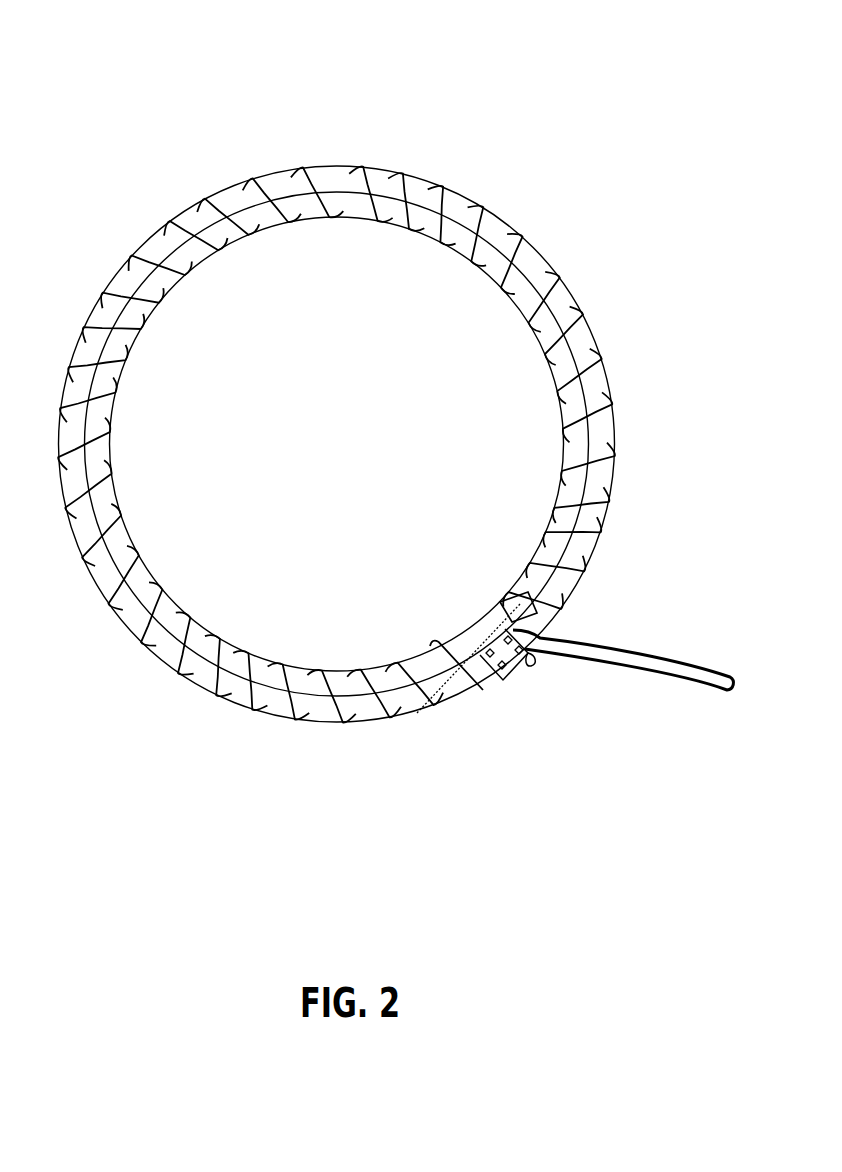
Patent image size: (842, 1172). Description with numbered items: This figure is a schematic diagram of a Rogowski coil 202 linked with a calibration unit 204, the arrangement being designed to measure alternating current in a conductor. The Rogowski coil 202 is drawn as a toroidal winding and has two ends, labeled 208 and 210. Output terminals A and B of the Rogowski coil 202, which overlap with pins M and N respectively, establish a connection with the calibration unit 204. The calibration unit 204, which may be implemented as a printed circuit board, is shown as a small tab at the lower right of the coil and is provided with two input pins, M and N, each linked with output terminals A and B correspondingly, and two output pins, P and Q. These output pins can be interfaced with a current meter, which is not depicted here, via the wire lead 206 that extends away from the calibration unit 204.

The Rogowski coil 202 is at (343, 158).
The calibration unit 204 is at (522, 672).
The wire lead 206 is at (640, 660).
The end of the Rogowski coil 208 is at (441, 641).
The end of the Rogowski coil 210 is at (493, 604).